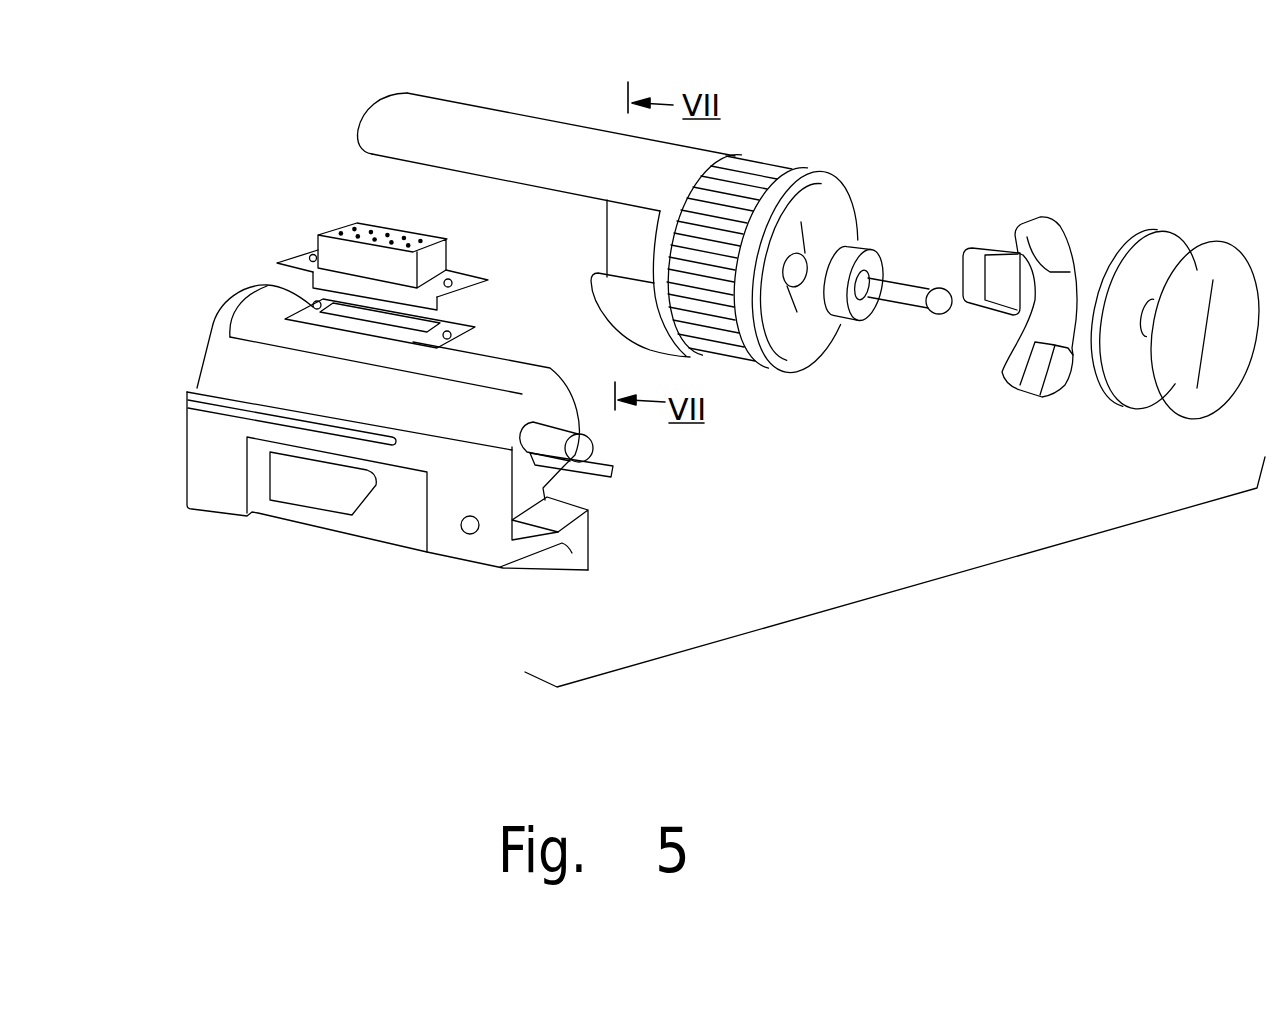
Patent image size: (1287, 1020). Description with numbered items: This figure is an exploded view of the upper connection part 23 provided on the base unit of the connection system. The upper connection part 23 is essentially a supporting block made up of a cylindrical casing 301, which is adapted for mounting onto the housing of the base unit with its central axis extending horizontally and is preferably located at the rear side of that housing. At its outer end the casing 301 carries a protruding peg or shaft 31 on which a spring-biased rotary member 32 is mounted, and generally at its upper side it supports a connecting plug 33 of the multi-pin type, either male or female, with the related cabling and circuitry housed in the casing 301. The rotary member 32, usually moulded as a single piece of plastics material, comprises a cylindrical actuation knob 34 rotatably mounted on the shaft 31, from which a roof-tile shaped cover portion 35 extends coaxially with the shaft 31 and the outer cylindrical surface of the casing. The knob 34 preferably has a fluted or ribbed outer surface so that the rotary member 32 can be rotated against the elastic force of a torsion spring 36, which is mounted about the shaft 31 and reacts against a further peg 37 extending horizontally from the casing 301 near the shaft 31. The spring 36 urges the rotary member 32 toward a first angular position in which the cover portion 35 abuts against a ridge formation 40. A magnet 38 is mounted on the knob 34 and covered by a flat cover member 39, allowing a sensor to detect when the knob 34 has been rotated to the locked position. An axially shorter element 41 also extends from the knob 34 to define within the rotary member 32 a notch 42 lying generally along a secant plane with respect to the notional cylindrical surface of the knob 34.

The upper connection part 23 is at (321, 104).
The cover portion 35 is at (437, 103).
The notch 42 is at (630, 247).
The axially shorter element 41 is at (604, 301).
The rotary member 32 is at (804, 131).
The actuation knob 34 is at (733, 365).
The torsion spring 36 is at (806, 243).
The magnet 38 is at (973, 261).
The flat cover member 39 is at (1237, 293).
The connecting plug 33 is at (328, 250).
The ridge formation 40 is at (365, 355).
The cylindrical casing 301 is at (523, 415).
The shaft 31 is at (536, 443).
The further peg 37 is at (612, 466).